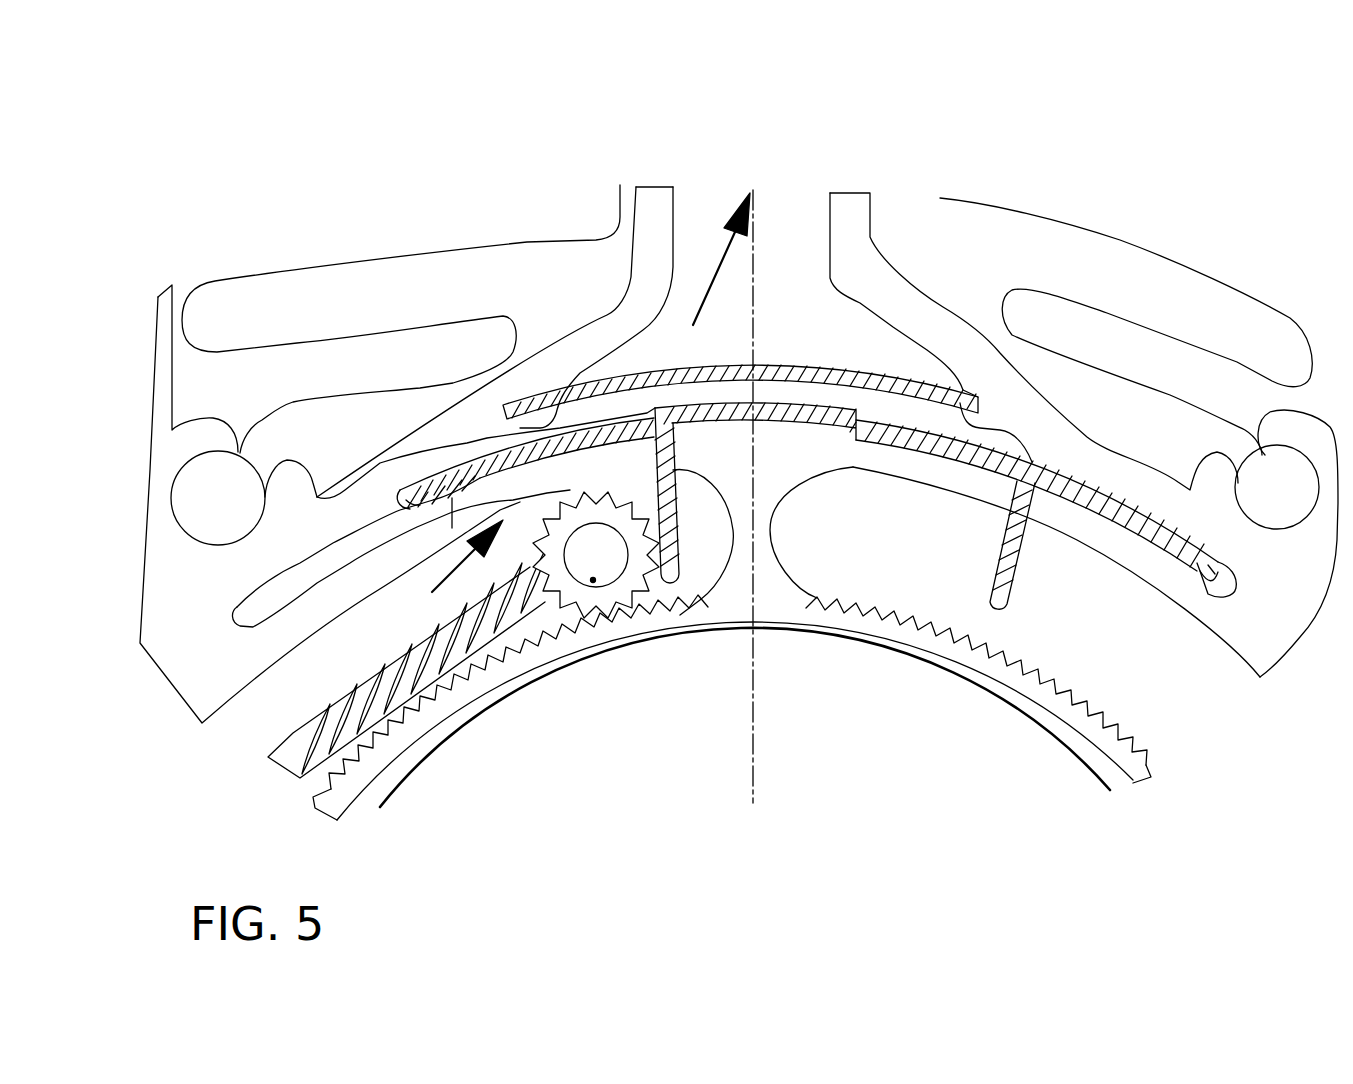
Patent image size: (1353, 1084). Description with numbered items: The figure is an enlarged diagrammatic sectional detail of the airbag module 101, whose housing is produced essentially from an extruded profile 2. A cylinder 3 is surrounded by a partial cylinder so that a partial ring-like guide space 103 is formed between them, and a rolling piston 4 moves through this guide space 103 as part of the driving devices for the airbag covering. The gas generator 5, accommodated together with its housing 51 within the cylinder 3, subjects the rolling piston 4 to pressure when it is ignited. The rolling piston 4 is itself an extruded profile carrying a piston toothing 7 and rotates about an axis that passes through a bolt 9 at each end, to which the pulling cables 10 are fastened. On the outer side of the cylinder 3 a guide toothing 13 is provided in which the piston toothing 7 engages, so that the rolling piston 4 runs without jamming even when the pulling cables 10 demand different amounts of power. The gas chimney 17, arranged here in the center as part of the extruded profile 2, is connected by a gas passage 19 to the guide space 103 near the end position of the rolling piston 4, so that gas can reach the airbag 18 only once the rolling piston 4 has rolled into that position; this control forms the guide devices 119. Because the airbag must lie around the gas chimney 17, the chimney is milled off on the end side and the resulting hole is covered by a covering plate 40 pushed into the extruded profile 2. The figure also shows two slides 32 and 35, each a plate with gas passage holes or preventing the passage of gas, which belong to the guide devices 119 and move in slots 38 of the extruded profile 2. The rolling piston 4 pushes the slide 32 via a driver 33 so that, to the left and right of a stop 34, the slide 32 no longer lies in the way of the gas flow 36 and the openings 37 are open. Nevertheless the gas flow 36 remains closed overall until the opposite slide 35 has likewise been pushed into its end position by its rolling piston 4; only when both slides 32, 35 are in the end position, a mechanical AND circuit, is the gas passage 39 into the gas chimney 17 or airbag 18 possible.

The extruded profile 2 is at (630, 277).
The cylinder 3 is at (1141, 770).
The rolling piston 4 is at (593, 580).
The gas generator 5 is at (632, 774).
The piston toothing 7 is at (553, 543).
The bolt 9 is at (588, 569).
The pulling cables 10 is at (282, 748).
The guide toothing 13 is at (447, 684).
The gas chimney 17 is at (790, 300).
The airbag 18 is at (1167, 260).
The gas passage 19 is at (693, 222).
The slide 32 is at (662, 410).
The driver 33 is at (993, 600).
The stop 34 is at (727, 553).
The opposite slide 35 is at (485, 478).
The gas flow 36 is at (722, 265).
The openings 37 is at (877, 423).
The slots 38 is at (357, 532).
The gas passage 39 is at (651, 455).
The covering plate 40 is at (618, 378).
The housing 51 is at (416, 773).
The airbag module 101 is at (910, 287).
The guide space 103 is at (237, 731).
The guide devices 119 is at (827, 325).